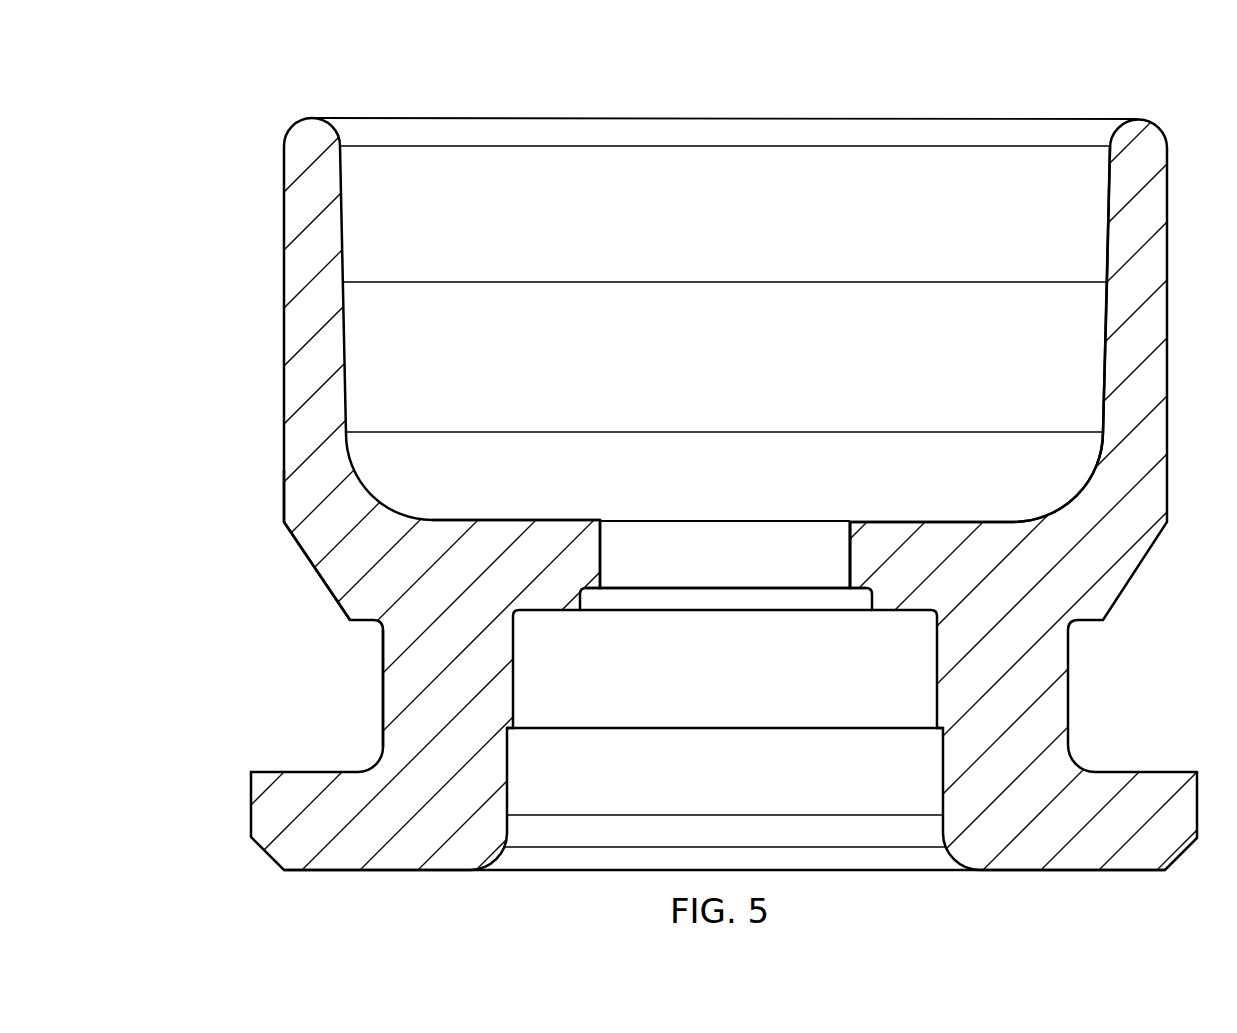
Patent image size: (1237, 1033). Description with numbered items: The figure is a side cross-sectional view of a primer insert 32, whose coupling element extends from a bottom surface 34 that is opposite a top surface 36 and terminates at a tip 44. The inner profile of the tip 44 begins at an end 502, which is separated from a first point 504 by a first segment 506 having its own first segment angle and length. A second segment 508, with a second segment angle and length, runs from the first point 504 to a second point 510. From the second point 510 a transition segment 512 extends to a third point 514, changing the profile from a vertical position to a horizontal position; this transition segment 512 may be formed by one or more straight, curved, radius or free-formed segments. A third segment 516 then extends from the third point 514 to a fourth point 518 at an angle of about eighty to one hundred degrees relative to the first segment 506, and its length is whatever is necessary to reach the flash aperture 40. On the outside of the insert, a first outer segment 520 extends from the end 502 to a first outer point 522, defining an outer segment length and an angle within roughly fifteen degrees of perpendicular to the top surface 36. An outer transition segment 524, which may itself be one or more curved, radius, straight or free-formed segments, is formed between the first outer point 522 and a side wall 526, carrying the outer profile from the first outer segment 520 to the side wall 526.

The primer insert 32 is at (448, 97).
The tip 44 is at (1140, 120).
The end 502 is at (1105, 143).
The first point 504 is at (1105, 280).
The first segment 506 is at (1107, 186).
The second segment 508 is at (1107, 306).
The second point 510 is at (1100, 432).
The transition segment 512 is at (1082, 490).
The third point 514 is at (1005, 517).
The third segment 516 is at (895, 521).
The fourth point 518 is at (845, 517).
The bottom surface 34 is at (562, 521).
The flash aperture 40 is at (602, 555).
The first outer segment 520 is at (284, 335).
The first outer point 522 is at (278, 520).
The outer transition segment 524 is at (325, 590).
The side wall 526 is at (383, 700).
The top surface 36 is at (1072, 872).